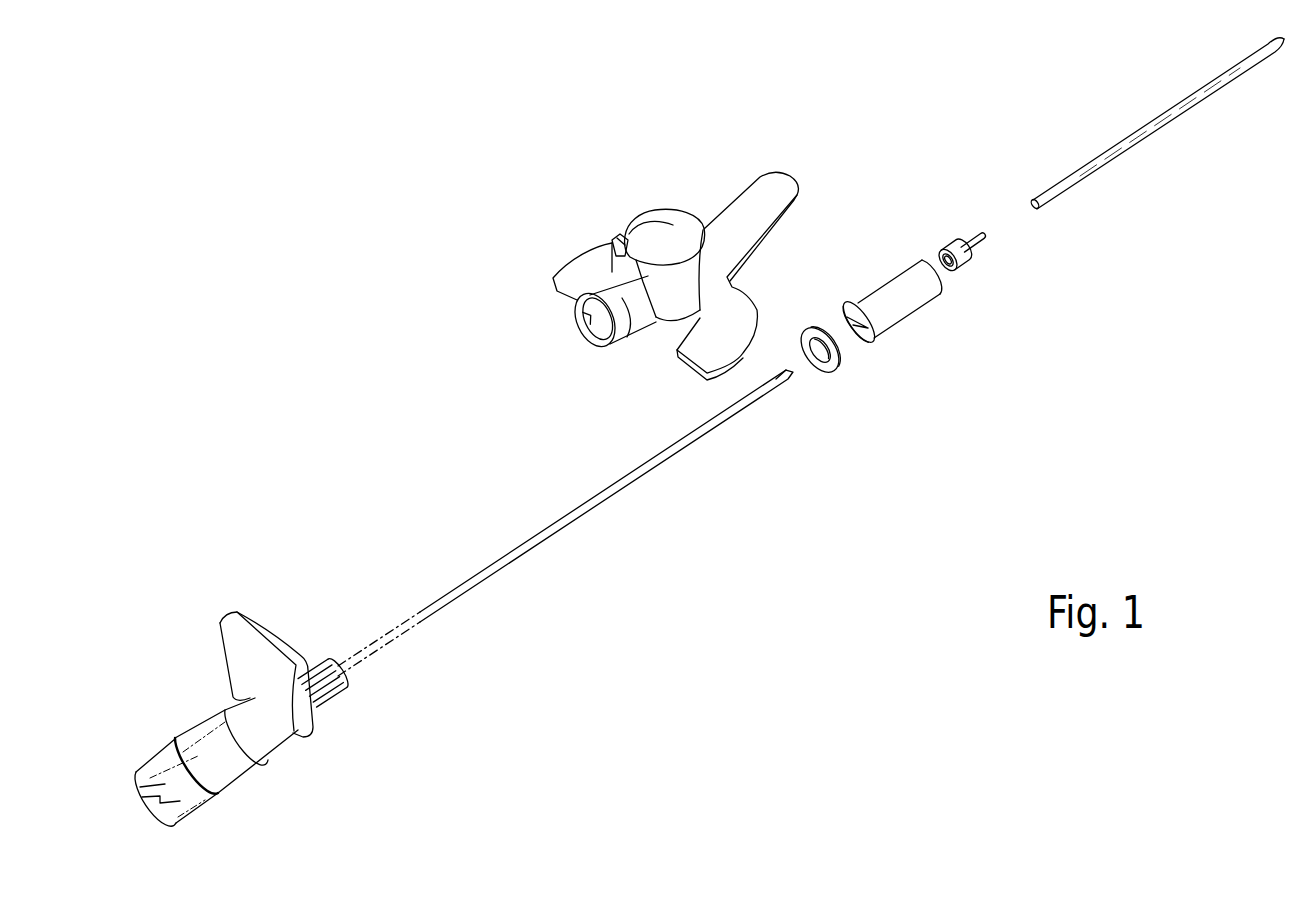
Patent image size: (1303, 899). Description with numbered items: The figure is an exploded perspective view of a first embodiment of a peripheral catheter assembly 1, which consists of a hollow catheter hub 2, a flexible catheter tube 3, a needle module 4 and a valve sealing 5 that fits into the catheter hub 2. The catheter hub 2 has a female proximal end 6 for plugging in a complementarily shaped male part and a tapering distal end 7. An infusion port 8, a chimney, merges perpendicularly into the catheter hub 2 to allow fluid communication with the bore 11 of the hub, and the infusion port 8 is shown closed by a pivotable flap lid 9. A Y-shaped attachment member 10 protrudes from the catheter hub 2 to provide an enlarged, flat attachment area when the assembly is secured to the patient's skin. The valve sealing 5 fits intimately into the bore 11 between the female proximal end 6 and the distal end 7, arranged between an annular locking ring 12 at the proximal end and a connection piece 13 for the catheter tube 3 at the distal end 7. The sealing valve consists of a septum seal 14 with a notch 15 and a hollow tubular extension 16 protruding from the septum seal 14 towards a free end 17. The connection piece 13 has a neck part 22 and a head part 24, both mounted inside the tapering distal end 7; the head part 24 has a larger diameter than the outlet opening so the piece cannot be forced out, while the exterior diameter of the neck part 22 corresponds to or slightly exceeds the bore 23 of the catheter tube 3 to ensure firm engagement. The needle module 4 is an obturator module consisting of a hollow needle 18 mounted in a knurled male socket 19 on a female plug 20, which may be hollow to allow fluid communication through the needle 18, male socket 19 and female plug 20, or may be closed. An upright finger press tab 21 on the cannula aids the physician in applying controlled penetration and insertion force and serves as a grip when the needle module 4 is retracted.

The peripheral catheter assembly 1 is at (422, 258).
The catheter hub 2 is at (575, 191).
The catheter tube 3 is at (1101, 118).
The needle module 4 is at (622, 580).
The valve sealing 5 is at (906, 300).
The female proximal end 6 is at (624, 305).
The tapering distal end 7 is at (708, 222).
The infusion port 8 is at (622, 238).
The pivotable flap lid 9 is at (670, 223).
The Y-shaped attachment member 10 is at (737, 318).
The bore 11 is at (597, 323).
The annular locking ring 12 is at (840, 368).
The connection piece 13 is at (967, 271).
The septum seal 14 is at (846, 310).
The notch 15 is at (857, 338).
The hollow tubular extension 16 is at (908, 271).
The free end 17 is at (941, 276).
The hollow needle 18 is at (524, 550).
The knurled male socket 19 is at (335, 697).
The female plug 20 is at (215, 745).
The finger press tab 21 is at (237, 648).
The neck part 22 is at (983, 232).
The bore 23 is at (1037, 206).
The head part 24 is at (957, 247).